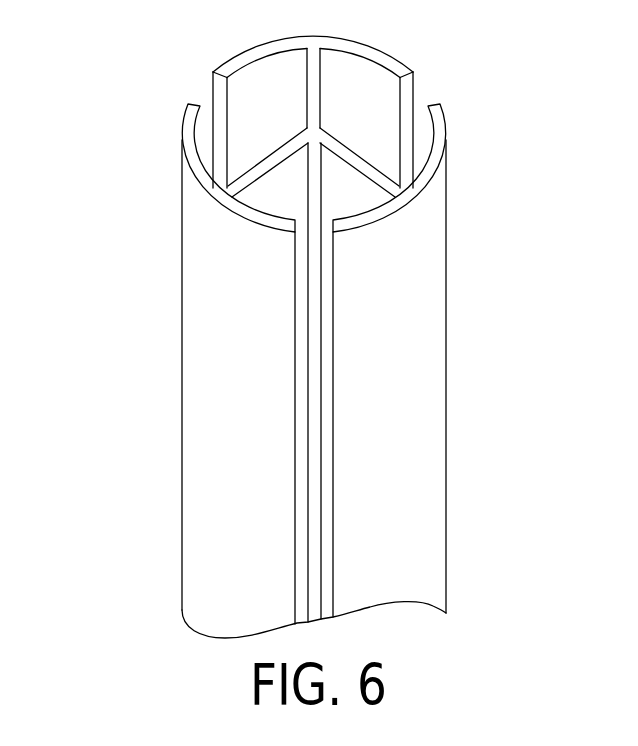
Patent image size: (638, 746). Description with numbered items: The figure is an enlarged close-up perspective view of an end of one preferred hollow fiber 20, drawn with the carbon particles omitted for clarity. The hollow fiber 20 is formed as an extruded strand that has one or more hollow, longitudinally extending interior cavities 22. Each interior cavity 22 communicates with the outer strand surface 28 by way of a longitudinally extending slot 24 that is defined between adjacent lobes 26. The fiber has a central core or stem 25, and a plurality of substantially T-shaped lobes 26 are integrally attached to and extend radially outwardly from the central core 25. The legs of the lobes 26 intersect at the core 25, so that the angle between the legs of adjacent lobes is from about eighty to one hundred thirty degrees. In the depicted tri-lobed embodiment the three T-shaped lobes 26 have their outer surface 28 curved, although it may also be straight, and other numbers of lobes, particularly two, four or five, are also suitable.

The hollow fiber 20 is at (118, 403).
The interior cavities 22 is at (275, 68).
The longitudinally extending slot 24 is at (198, 87).
The central core 25 is at (312, 313).
The T-shaped lobes 26 is at (426, 236).
The outer strand surface 28 is at (208, 463).